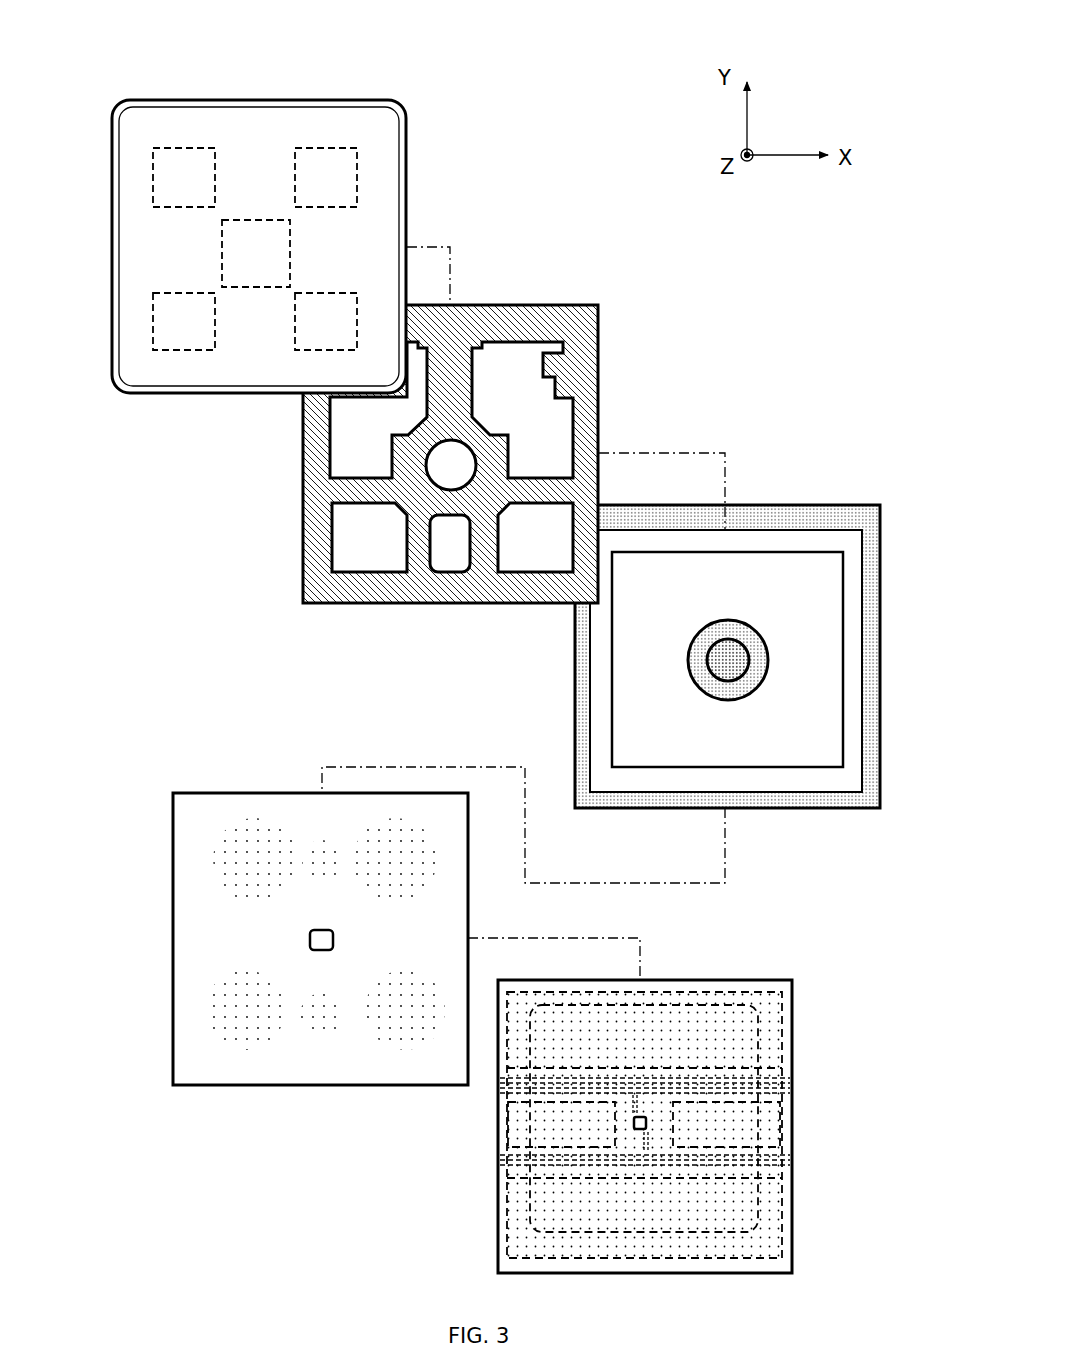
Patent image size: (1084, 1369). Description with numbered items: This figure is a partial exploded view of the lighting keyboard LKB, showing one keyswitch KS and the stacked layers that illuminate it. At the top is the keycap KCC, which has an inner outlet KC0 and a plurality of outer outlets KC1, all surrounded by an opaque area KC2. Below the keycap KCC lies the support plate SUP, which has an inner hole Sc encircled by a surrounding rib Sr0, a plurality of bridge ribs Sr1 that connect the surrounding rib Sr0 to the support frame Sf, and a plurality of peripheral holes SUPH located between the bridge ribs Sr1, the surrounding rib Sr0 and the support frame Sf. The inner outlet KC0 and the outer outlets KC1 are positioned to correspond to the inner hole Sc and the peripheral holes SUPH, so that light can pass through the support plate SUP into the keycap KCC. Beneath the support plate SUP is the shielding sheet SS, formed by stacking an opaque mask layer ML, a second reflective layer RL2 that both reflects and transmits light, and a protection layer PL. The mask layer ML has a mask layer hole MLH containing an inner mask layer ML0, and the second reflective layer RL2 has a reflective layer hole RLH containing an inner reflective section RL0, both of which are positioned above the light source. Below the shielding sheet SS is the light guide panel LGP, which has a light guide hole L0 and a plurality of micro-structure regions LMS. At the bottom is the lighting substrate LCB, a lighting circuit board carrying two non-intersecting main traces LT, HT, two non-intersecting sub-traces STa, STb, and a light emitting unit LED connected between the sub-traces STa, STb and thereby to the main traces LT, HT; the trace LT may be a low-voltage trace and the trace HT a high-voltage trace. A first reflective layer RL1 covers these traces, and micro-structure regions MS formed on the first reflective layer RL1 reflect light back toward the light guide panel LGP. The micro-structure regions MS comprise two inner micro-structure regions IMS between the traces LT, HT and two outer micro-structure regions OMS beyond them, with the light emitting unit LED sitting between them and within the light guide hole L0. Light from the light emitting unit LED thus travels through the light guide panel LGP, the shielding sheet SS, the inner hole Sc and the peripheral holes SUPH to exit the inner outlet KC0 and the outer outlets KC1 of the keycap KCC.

The lighting keyboard LKB is at (598, 55).
The keyswitch KS is at (300, 248).
The keycap KCC is at (258, 98).
The inner outlet KC0 is at (257, 217).
The opaque area KC2 is at (330, 245).
The outer outlets KC1 is at (185, 210).
The support plate SUP is at (419, 424).
The peripheral holes SUPH is at (522, 545).
The inner hole Sc is at (448, 477).
The surrounding rib Sr0 is at (477, 442).
The bridge ribs Sr1 is at (527, 490).
The support frame Sf is at (585, 388).
The shielding sheet SS is at (656, 632).
The mask layer ML is at (782, 503).
The mask layer hole MLH is at (610, 723).
The inner mask layer ML0 is at (742, 690).
The protection layer PL is at (657, 623).
The second reflective layer RL2 is at (600, 640).
The reflective layer hole RLH is at (611, 660).
The inner reflective section RL0 is at (688, 660).
The light guide panel LGP is at (287, 905).
The micro-structure regions of the light guide panel LMS is at (223, 997).
The light guide hole L0 is at (318, 950).
The lighting substrate LCB is at (645, 1106).
The outer micro-structure regions OMS is at (760, 1000).
The inner micro-structure regions IMS is at (725, 1102).
The micro-structure regions MS is at (642, 1177).
The high-voltage trace HT is at (782, 1077).
The light emitting unit LED is at (650, 1122).
The first reflective layer RL1 is at (788, 1143).
The sub-trace STa is at (627, 1107).
The sub-trace STb is at (650, 1140).
The low-voltage trace LT is at (530, 1165).